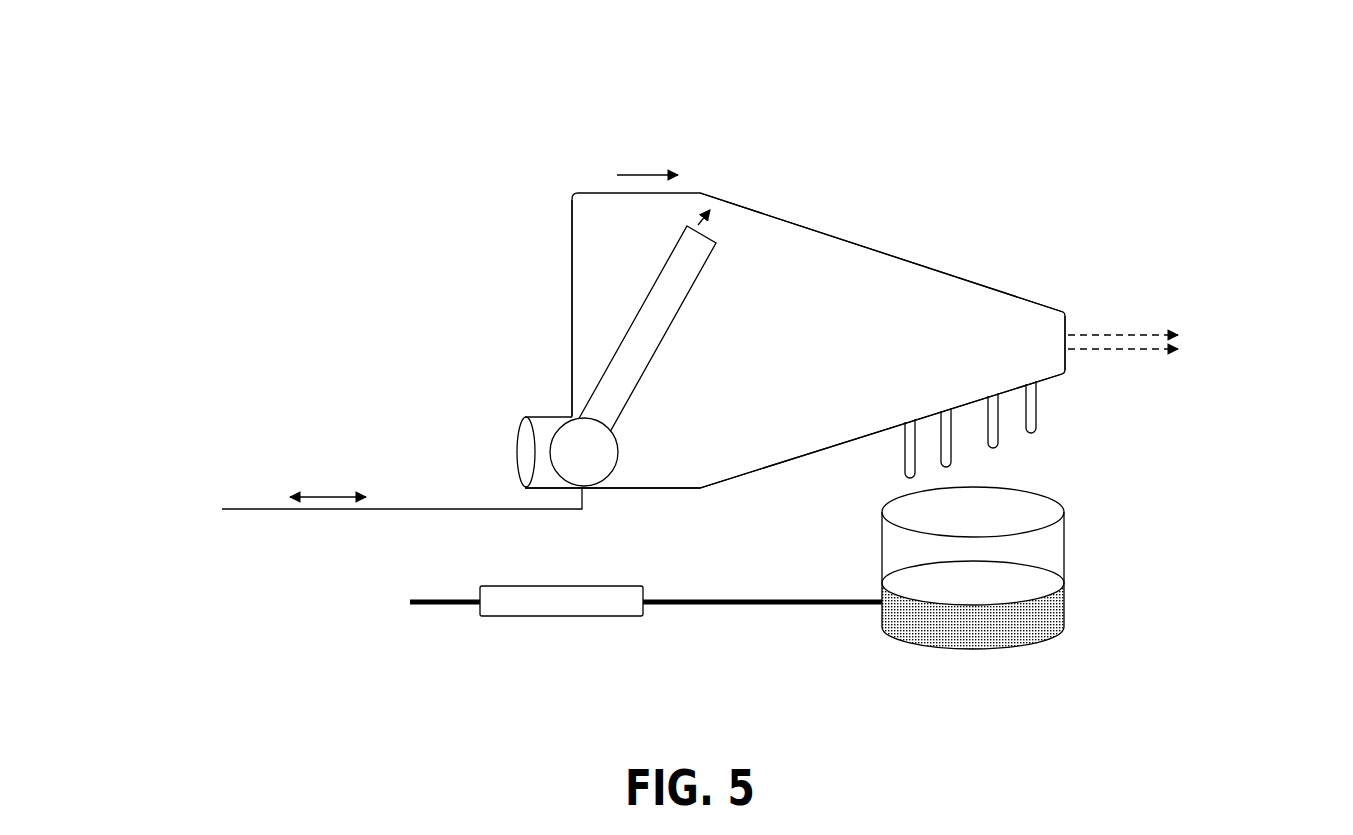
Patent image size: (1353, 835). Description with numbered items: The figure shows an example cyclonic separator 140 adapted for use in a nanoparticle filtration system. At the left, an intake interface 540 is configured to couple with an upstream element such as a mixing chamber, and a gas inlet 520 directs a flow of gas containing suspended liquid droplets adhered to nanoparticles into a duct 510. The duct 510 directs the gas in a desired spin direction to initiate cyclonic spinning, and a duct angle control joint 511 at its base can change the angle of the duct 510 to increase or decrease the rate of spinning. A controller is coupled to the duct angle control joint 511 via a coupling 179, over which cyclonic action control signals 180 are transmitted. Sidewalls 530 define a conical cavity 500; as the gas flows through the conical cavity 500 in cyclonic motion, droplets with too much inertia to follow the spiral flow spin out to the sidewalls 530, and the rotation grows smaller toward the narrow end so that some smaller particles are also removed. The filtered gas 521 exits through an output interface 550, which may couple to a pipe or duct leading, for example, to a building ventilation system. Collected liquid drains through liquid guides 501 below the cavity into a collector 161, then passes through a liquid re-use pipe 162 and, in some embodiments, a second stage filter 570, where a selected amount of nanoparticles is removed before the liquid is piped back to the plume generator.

The cyclonic separator 140 is at (830, 34).
The intake interface 540 is at (563, 275).
The sidewalls 530 is at (870, 248).
The conical cavity 500 is at (881, 340).
The output interface 550 is at (1066, 324).
The filtered gas 521 is at (1177, 323).
The liquid guides 501 is at (1046, 413).
The gas inlet 520 is at (558, 452).
The duct 510 is at (663, 347).
The duct angle control joint 511 is at (585, 468).
The cyclonic action control signals 180 is at (326, 472).
The coupling 179 is at (314, 511).
The second stage filter 570 is at (561, 652).
The liquid re-use pipe 162 is at (646, 639).
The collector 161 is at (973, 604).